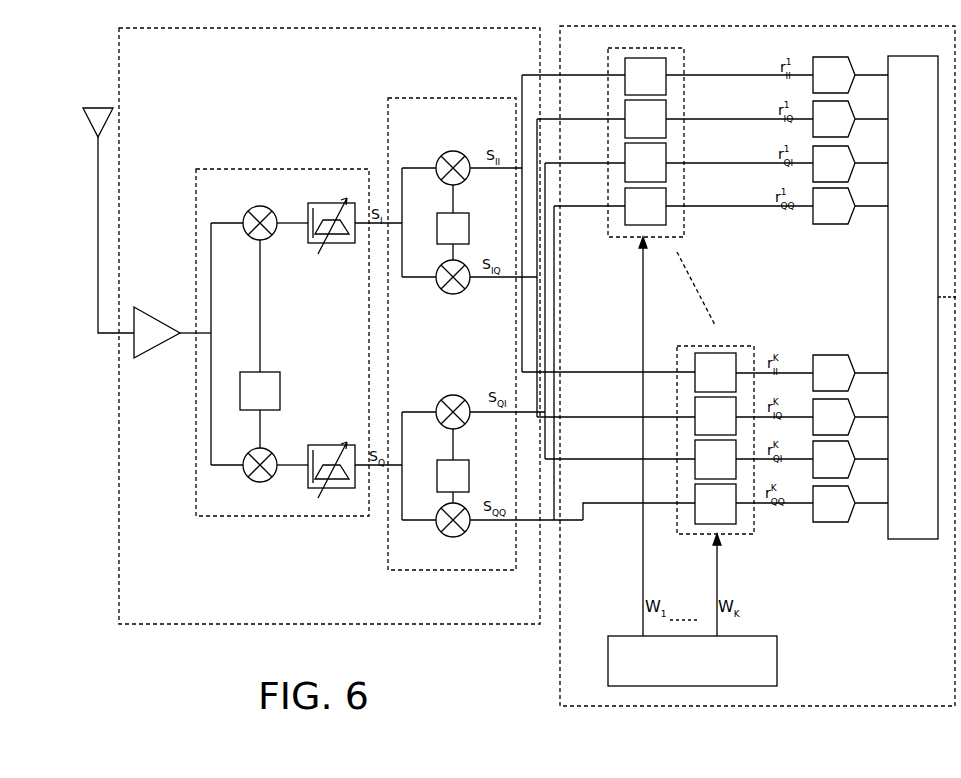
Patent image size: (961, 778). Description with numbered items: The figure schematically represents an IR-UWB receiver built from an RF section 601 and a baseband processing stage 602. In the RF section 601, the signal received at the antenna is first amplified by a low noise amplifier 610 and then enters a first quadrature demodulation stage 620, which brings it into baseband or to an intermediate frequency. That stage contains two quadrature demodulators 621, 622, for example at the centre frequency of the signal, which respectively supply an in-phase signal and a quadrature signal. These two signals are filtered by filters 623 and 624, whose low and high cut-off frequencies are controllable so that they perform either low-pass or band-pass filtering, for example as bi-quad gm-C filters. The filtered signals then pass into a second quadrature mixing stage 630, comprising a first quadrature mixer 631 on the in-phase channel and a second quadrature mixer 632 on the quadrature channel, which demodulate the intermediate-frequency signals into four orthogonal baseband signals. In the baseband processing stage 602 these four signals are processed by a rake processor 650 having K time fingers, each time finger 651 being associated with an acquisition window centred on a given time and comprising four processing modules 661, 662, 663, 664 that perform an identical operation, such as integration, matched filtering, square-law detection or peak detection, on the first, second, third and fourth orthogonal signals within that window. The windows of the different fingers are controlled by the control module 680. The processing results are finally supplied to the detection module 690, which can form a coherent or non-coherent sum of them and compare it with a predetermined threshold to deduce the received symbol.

The RF section 601 is at (190, 623).
The baseband processing stage 602 is at (560, 641).
The low noise amplifier 610 is at (150, 351).
The first quadrature demodulation stage 620 is at (288, 168).
The quadrature demodulator 621 is at (262, 206).
The quadrature demodulator 622 is at (254, 483).
The filter 623 is at (326, 203).
The filter 624 is at (324, 445).
The second quadrature mixing stage 630 is at (490, 98).
The first quadrature mixer 631 is at (453, 210).
The second quadrature mixer 632 is at (453, 451).
The rake processor 650 is at (615, 436).
The time finger 651 is at (684, 238).
The processing module 661 is at (666, 70).
The processing module 662 is at (666, 114).
The processing module 663 is at (666, 158).
The processing module 664 is at (666, 201).
The control module 680 is at (692, 661).
The detection module 690 is at (922, 297).